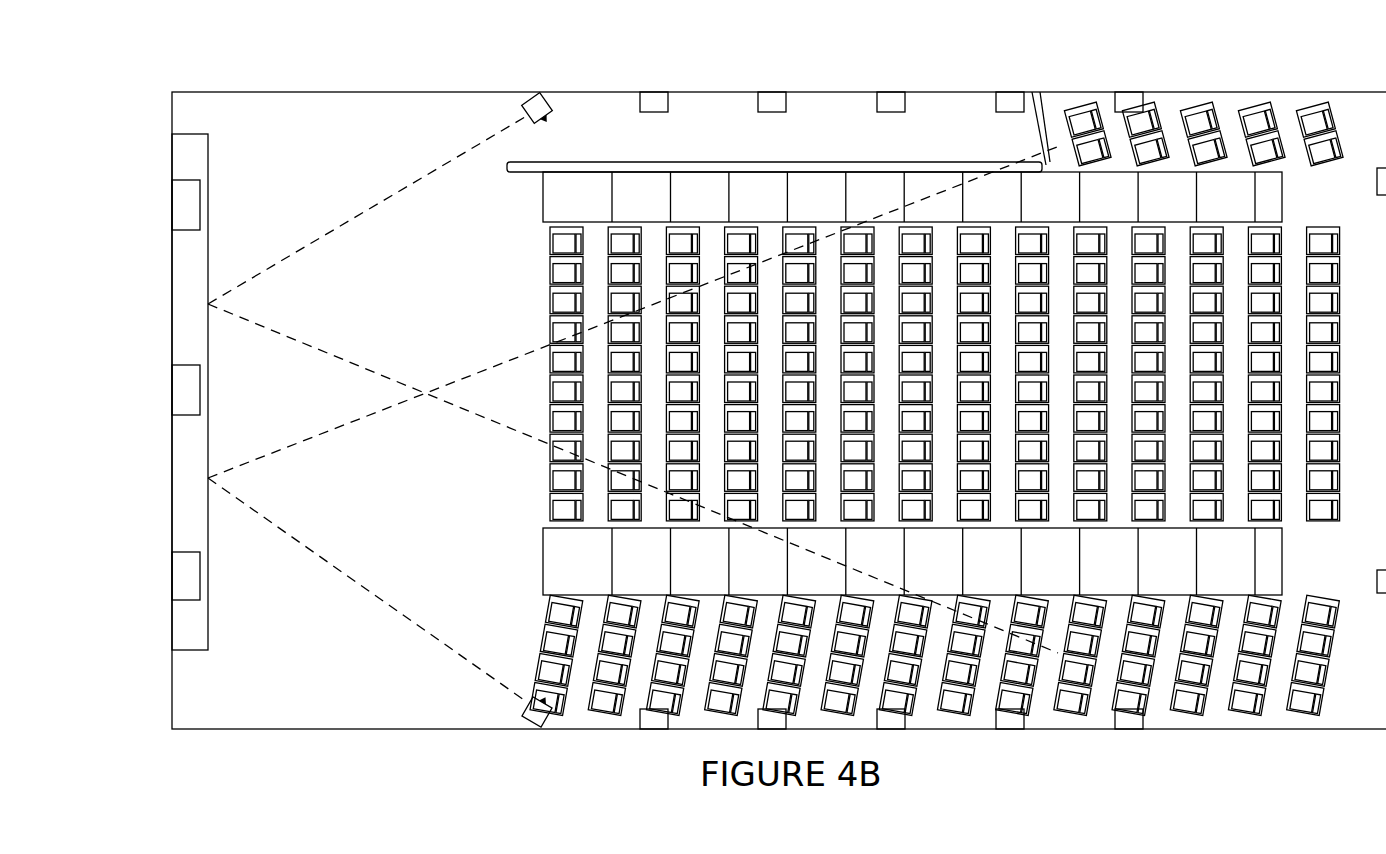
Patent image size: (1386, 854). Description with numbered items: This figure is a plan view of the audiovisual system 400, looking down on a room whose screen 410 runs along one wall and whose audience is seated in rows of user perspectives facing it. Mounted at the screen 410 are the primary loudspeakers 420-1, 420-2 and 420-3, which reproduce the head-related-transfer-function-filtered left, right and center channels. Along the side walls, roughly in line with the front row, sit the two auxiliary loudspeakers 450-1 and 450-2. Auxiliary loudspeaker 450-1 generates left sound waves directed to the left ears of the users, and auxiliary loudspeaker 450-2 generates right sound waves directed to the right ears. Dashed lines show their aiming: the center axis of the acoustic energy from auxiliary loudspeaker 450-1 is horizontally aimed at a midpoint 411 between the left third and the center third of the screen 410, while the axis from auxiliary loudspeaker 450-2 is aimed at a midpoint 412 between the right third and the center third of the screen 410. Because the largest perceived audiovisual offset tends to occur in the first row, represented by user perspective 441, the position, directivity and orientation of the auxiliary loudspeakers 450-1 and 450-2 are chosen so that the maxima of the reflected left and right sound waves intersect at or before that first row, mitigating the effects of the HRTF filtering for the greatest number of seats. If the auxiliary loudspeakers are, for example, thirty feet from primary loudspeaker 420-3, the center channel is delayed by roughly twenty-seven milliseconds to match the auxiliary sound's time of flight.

The audiovisual system 400 is at (1204, 78).
The screen 410 is at (186, 514).
The midpoint 411 is at (201, 478).
The midpoint 412 is at (201, 303).
The primary loudspeaker 420-1 is at (310, 626).
The primary loudspeaker 420-2 is at (310, 224).
The primary loudspeaker 420-3 is at (181, 394).
The user perspective 441 is at (531, 394).
The auxiliary loudspeaker 450-1 is at (526, 696).
The auxiliary loudspeaker 450-2 is at (665, 149).